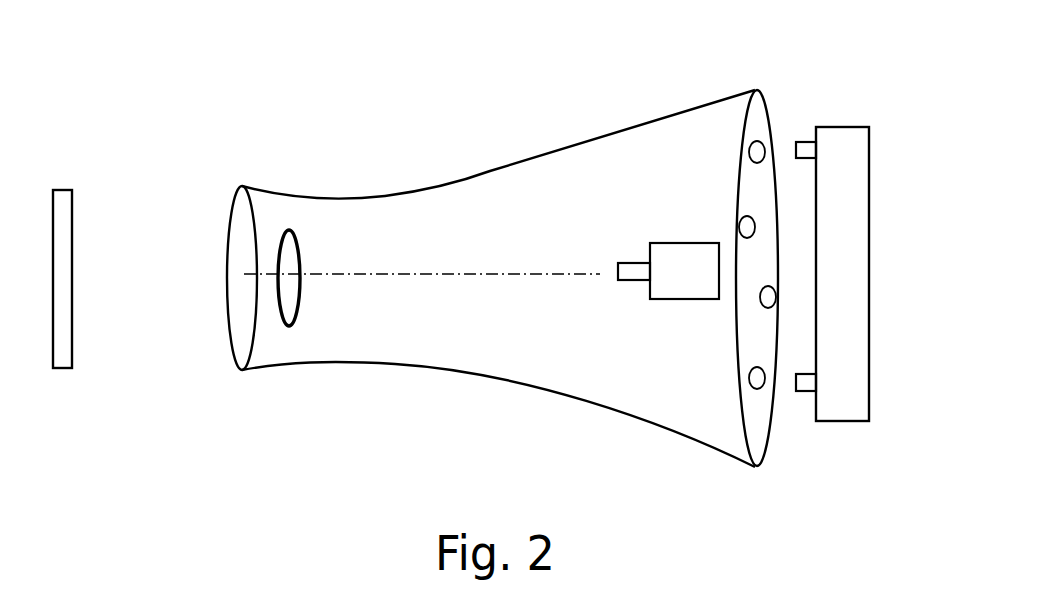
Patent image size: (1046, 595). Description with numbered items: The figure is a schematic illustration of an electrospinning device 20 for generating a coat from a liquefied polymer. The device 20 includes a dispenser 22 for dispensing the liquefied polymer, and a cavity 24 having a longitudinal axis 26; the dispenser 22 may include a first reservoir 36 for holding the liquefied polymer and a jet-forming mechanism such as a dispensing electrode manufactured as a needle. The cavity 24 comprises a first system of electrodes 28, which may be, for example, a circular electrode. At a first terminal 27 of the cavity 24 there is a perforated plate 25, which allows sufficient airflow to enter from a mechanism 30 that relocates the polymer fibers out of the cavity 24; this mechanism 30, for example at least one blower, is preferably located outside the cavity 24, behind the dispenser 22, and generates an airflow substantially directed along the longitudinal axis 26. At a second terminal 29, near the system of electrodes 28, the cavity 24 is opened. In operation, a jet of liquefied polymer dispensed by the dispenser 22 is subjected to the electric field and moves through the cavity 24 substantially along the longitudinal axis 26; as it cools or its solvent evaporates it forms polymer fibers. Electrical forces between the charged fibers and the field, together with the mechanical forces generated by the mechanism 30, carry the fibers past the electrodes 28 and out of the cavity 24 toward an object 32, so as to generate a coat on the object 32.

The device 20 is at (476, 60).
The dispenser 22 is at (664, 258).
The cavity 24 is at (485, 351).
The perforated plate 25 is at (764, 118).
The longitudinal axis 26 is at (422, 262).
The first terminal 27 is at (757, 300).
The first system of electrodes 28 is at (311, 274).
The second terminal 29 is at (247, 301).
The mechanism 30 is at (832, 274).
The object 32 is at (66, 261).
The first reservoir 36 is at (690, 295).